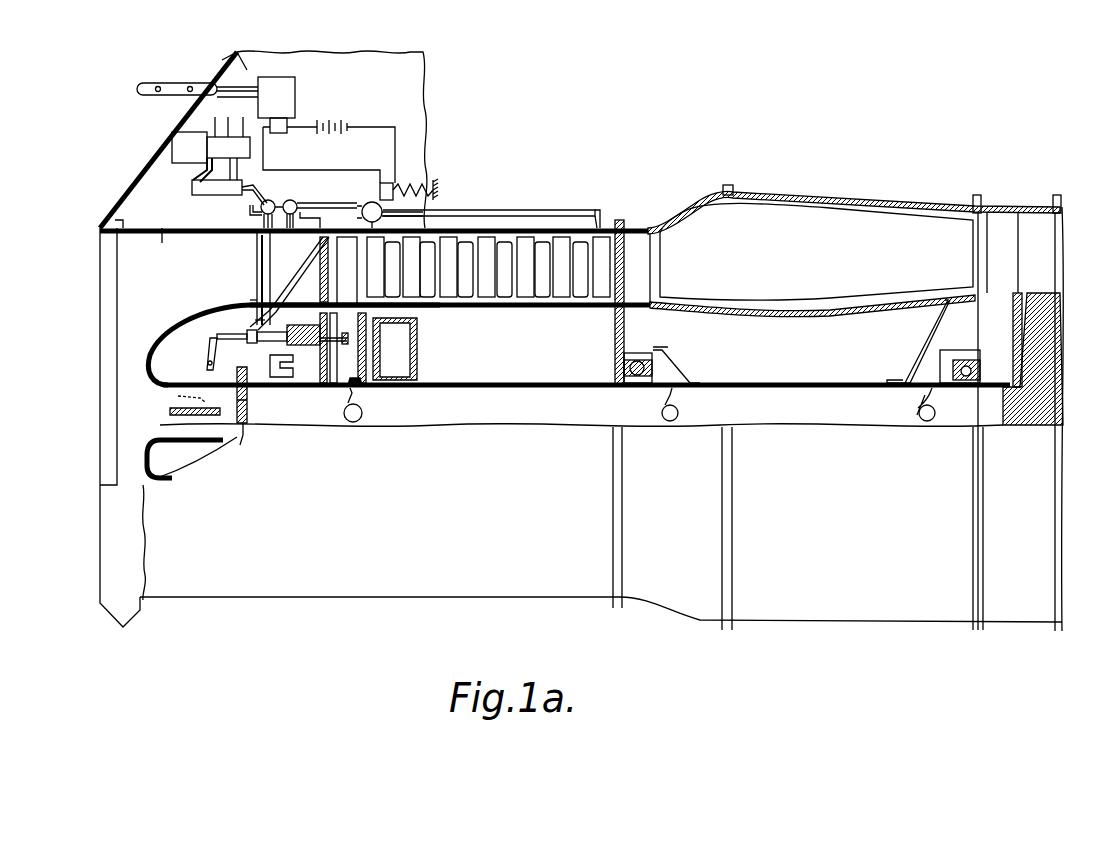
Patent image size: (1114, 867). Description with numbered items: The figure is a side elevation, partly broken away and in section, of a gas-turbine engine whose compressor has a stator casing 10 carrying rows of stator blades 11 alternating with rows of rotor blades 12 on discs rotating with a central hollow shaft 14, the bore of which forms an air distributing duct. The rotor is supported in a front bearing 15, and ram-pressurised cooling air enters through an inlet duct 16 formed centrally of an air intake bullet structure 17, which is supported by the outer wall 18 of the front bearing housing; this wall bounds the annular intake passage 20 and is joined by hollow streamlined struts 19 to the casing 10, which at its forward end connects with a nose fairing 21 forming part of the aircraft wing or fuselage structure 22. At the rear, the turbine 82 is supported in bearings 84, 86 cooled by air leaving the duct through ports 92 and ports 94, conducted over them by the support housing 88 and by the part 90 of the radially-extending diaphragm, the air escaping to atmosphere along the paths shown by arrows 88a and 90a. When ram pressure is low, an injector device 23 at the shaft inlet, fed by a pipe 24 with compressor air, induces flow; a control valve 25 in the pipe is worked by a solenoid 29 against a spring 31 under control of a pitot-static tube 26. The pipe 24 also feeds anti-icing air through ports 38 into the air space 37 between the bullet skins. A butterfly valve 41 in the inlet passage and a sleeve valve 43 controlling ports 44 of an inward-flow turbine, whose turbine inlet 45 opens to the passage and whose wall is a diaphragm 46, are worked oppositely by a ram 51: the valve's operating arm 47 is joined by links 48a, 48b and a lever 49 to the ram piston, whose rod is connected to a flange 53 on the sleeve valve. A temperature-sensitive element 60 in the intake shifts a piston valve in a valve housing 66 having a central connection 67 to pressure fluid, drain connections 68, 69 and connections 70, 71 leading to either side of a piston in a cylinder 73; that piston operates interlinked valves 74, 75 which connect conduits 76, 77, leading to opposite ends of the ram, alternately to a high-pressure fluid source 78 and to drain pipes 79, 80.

The stator casing 10 is at (360, 236).
The stator blades 11 is at (535, 225).
The rotor blades 12 is at (523, 322).
The central hollow shaft 14 is at (515, 380).
The front bearing 15 is at (296, 388).
The inlet duct 16 is at (143, 433).
The air intake bullet structure 17 is at (165, 330).
The outer wall of front bearing housing 18 is at (258, 310).
The hollow streamlined struts 19 is at (257, 277).
The intake passage 20 is at (178, 289).
The nose fairing 21 is at (104, 222).
The aircraft wing or fuselage structure 22 is at (225, 60).
The injector device 23 is at (237, 428).
The pipe 24 is at (328, 268).
The control valve 25 is at (362, 203).
The pitot-static tube 26 is at (150, 76).
The solenoid 29 is at (385, 183).
The spring 31 is at (428, 178).
The air space 37 is at (150, 352).
The ports 38 is at (248, 400).
The butterfly valve 41 is at (372, 322).
The sleeve valve 43 is at (362, 390).
The ports 44 is at (344, 414).
The turbine inlet 45 is at (360, 313).
The diaphragm 46 is at (370, 350).
The operating arm 47 is at (170, 412).
The link 48a is at (217, 337).
The link 48b is at (185, 398).
The lever 49 is at (208, 352).
The ram 51 is at (247, 336).
The flange 53 is at (367, 368).
The temperature-sensitive element 60 is at (160, 240).
The valve housing 66 is at (250, 148).
The central connection 67 is at (228, 118).
The drain connection 68 is at (180, 132).
The drain connection 69 is at (290, 103).
The connection 70 is at (198, 178).
The connection 71 is at (248, 166).
The cylinder 73 is at (203, 200).
The valve 74 is at (253, 198).
The valve 75 is at (278, 200).
The conduit 76 is at (262, 261).
The conduit 77 is at (258, 246).
The high-pressure fluid source 78 is at (350, 205).
The drain pipe 79 is at (250, 212).
The drain pipe 80 is at (300, 202).
The turbine 82 is at (1050, 325).
The bearing 84 is at (624, 366).
The bearing 86 is at (968, 388).
The support housing 88 is at (685, 370).
The arrows 88a is at (645, 222).
The part of radially-extending diaphragm 90 is at (912, 366).
The arrows 90a is at (1003, 212).
The ports 92 is at (662, 410).
The ports 94 is at (917, 408).